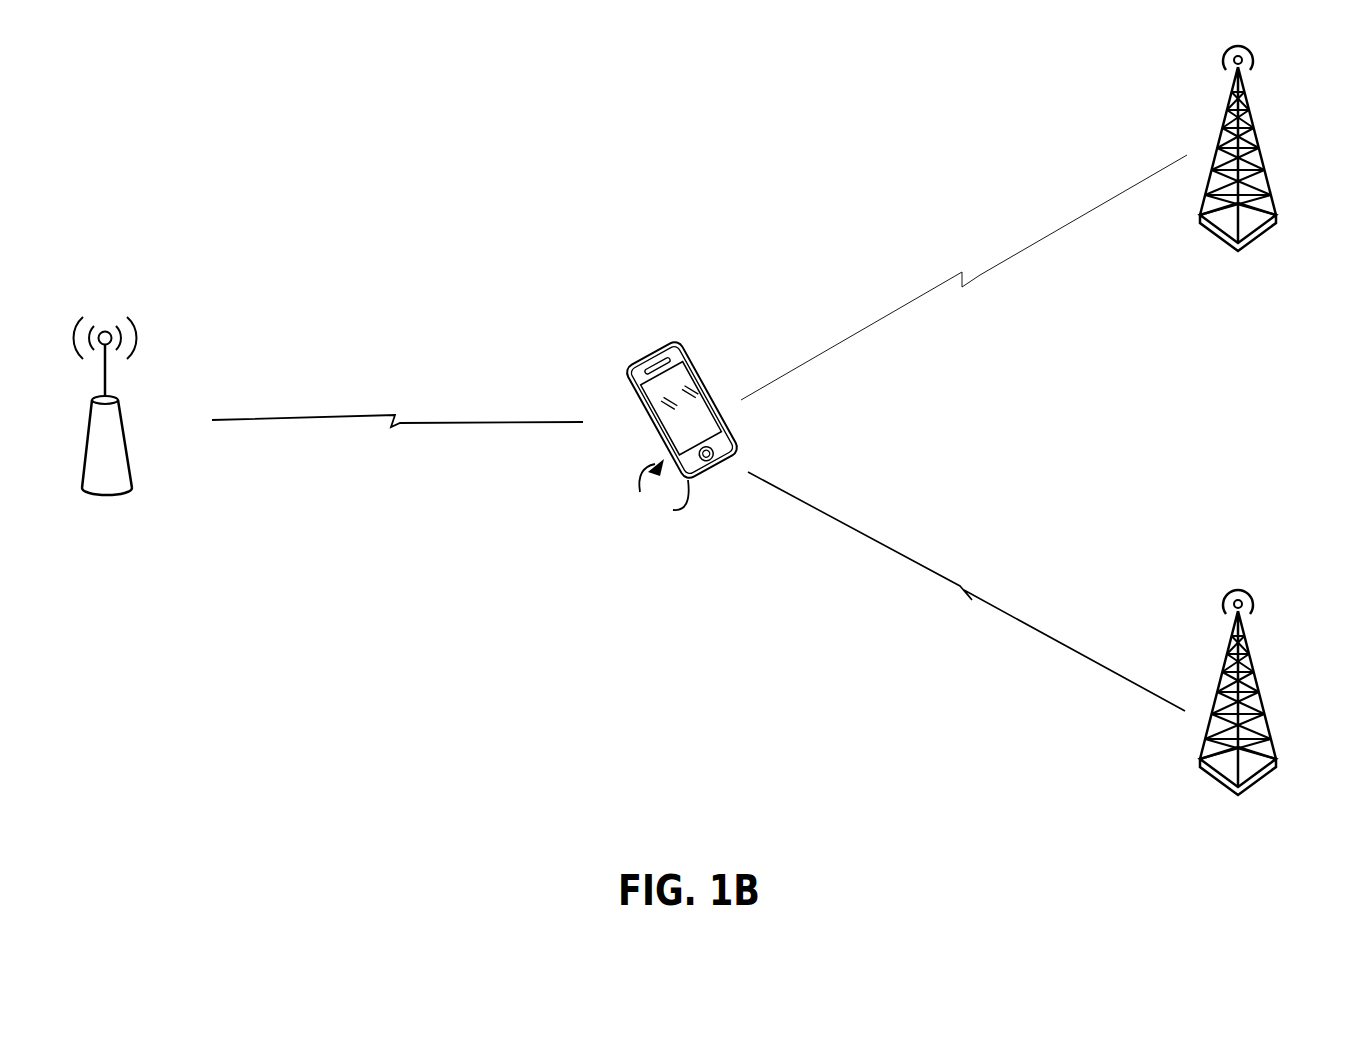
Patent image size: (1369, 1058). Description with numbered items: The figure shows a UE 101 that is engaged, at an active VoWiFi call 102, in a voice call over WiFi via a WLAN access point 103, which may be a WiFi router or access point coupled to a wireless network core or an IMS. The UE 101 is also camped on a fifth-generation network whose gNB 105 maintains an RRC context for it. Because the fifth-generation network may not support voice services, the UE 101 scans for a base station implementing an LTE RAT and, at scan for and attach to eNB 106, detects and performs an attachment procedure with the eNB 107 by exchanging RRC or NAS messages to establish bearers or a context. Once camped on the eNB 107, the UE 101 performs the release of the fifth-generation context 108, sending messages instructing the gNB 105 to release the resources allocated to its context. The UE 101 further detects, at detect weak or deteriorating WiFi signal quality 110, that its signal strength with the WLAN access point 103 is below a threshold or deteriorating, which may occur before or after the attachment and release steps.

The UE 101 is at (660, 347).
The active VoWiFi call 102 is at (395, 248).
The WLAN access point 103 is at (130, 467).
The gNB 105 is at (1262, 234).
The scan for and attach to eNB 106 is at (982, 600).
The eNB 107 is at (1266, 776).
The release 5G context 108 is at (982, 110).
The detect weak or deteriorating WiFi signal quality 110 is at (618, 558).